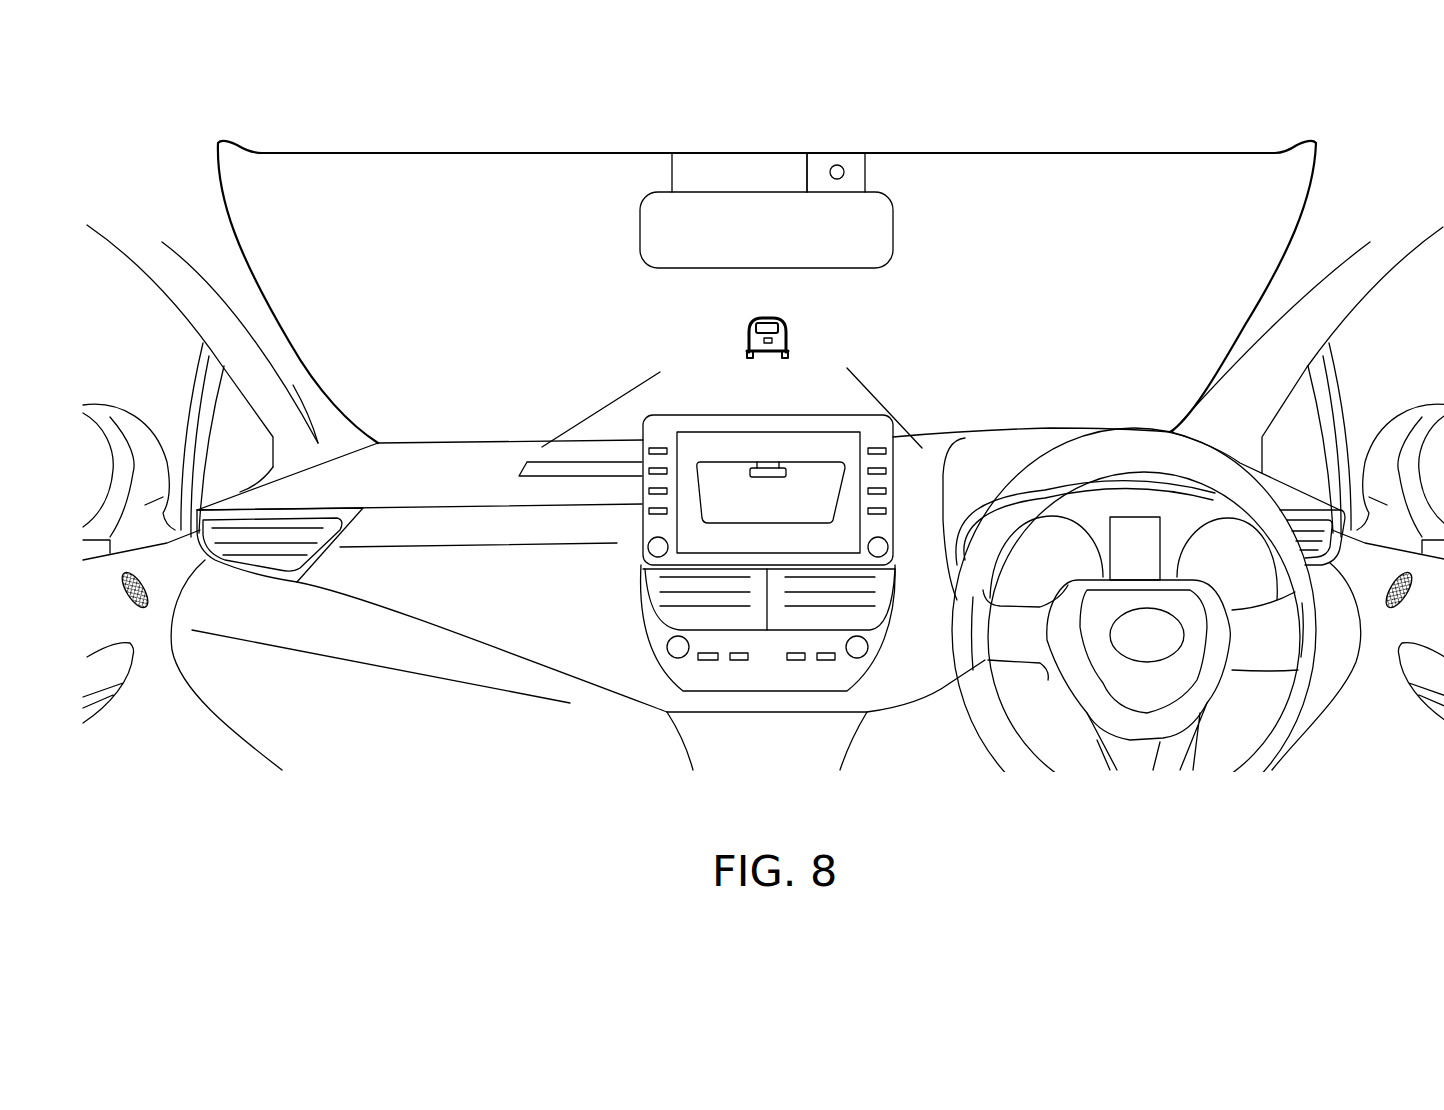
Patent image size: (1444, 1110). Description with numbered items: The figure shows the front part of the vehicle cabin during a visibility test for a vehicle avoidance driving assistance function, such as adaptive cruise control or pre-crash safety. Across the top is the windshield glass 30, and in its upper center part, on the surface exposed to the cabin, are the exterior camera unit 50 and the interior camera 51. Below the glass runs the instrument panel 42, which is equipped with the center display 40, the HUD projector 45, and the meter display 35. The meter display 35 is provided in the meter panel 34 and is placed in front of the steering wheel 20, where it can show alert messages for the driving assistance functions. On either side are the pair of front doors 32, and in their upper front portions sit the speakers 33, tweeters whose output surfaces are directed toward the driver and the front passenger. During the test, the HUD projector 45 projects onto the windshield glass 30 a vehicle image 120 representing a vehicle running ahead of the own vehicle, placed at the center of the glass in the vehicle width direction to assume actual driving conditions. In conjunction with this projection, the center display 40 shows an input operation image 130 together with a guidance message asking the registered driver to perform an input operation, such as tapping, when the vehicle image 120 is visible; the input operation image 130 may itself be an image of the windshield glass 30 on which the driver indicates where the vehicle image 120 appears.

The steering wheel 20 is at (1040, 483).
The windshield glass 30 is at (1023, 175).
The front doors 32 is at (167, 565).
The speakers 33 is at (142, 610).
The meter panel 34 is at (1178, 513).
The meter display 35 is at (1133, 540).
The center display 40 is at (841, 413).
The instrument panel 42 is at (452, 473).
The HUD projector 45 is at (577, 470).
The exterior camera unit 50 is at (697, 167).
The interior camera 51 is at (815, 163).
The vehicle image 120 is at (768, 317).
The input operation image 130 is at (722, 485).